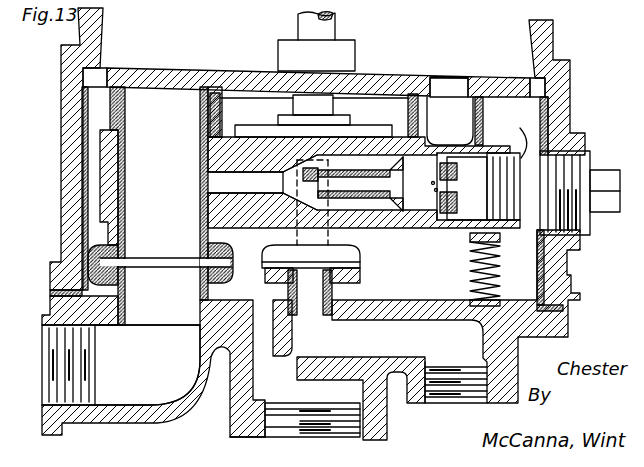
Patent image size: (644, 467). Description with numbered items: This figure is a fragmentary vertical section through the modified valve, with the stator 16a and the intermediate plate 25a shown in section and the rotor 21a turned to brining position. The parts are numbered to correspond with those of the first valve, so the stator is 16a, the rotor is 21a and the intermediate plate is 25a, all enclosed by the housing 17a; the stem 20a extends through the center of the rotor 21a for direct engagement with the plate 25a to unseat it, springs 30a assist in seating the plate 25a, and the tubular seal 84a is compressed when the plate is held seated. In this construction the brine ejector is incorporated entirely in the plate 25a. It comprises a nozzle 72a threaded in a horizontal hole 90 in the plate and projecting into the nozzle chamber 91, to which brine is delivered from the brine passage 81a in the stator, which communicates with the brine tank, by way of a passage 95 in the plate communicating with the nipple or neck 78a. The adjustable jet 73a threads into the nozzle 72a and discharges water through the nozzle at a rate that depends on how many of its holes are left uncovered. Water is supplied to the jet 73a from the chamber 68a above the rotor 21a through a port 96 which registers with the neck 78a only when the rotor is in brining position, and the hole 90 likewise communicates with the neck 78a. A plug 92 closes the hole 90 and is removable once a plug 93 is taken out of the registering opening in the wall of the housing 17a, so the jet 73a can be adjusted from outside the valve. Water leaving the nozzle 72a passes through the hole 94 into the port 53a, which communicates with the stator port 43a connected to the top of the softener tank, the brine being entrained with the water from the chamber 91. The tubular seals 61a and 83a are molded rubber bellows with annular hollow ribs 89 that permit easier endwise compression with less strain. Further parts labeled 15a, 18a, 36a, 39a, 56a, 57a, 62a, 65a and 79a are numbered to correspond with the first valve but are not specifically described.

The valve body 15a is at (437, 215).
The stator 16a is at (570, 338).
The housing 17a is at (571, 268).
The gasket 18a is at (565, 312).
The stem 20a is at (297, 28).
The rotor 21a is at (366, 77).
The intermediate plate 25a is at (352, 143).
The springs 30a is at (497, 260).
The threaded outlet 36a is at (352, 3).
The threaded inlet 39a is at (43, 372).
The stator port 43a is at (168, 326).
The port 53a is at (151, 206).
The packing ring 56a is at (218, 118).
The sleeve 57a is at (124, 212).
The tubular seal 61a is at (218, 246).
The sleeve base 62a is at (119, 326).
The side wall 65a is at (553, 118).
The chamber 68a is at (525, 43).
The nozzle 72a is at (367, 212).
The adjustable jet 73a is at (448, 178).
The nipple 78a is at (486, 115).
The passage 79a is at (310, 314).
The brine passage 81a is at (361, 387).
The tubular seal 83a is at (340, 290).
The tubular seal 84a is at (408, 104).
The annular hollow ribs 89 is at (268, 278).
The horizontal hole 90 is at (461, 234).
The nozzle chamber 91 is at (345, 209).
The plug 92 is at (487, 173).
The plug 93 is at (582, 163).
The hole 94 is at (245, 182).
The passage 95 is at (284, 183).
The port 96 is at (447, 78).